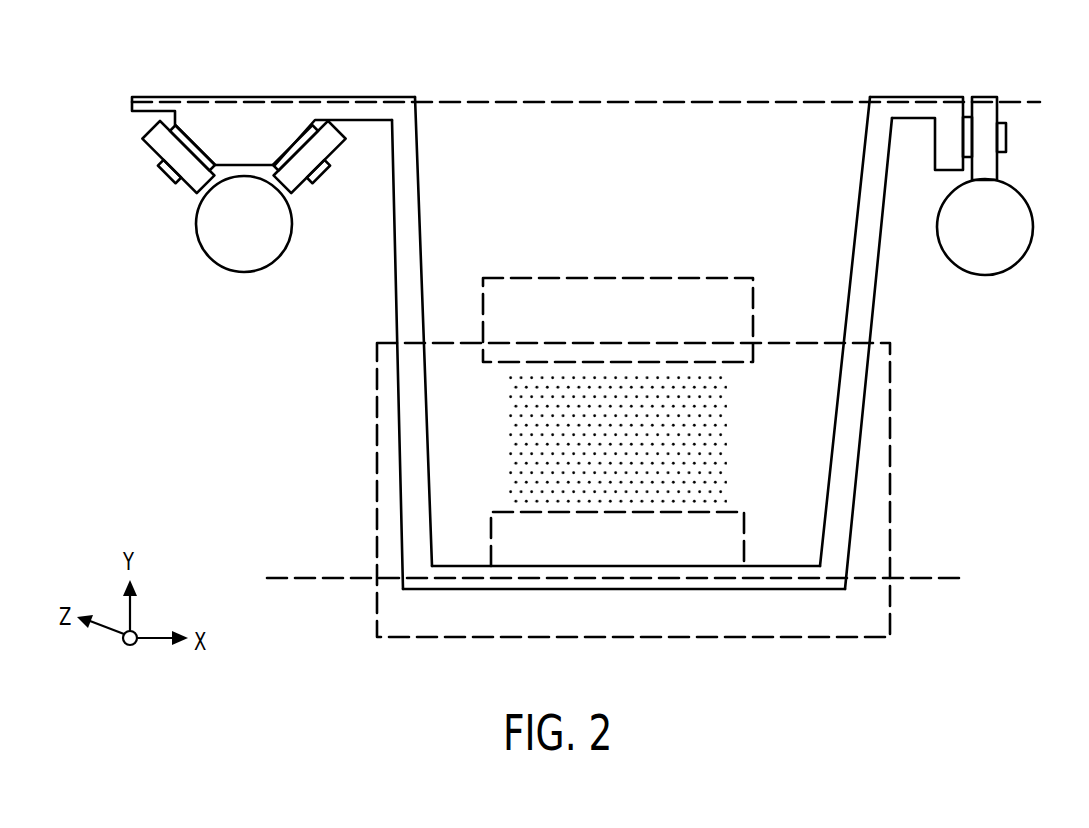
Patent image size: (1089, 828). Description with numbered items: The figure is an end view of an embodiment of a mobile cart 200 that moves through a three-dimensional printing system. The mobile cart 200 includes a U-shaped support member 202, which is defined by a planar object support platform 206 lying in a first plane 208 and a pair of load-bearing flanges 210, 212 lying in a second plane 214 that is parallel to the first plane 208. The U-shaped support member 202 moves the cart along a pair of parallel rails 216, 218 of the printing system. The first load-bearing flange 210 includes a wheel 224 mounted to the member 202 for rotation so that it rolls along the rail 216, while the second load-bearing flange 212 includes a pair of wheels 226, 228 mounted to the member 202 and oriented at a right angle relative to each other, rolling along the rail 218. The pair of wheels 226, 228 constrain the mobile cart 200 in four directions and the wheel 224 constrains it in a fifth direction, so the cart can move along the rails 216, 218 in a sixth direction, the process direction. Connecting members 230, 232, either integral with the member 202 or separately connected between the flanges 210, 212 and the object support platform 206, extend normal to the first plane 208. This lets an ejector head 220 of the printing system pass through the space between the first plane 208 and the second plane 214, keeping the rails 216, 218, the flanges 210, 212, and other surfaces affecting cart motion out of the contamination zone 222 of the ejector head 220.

The mobile cart 200 is at (261, 473).
The U-shaped support member 202 is at (858, 450).
The planar object support platform 206 is at (609, 592).
The first plane 208 is at (350, 576).
The first load-bearing flange 210 is at (923, 95).
The second load-bearing flange 212 is at (282, 95).
The second plane 214 is at (1018, 100).
The rail 216 is at (996, 276).
The rail 218 is at (263, 272).
The ejector head 220 is at (625, 276).
The contamination zone 222 is at (375, 437).
The wheel 224 is at (986, 157).
The wheel 226 is at (168, 148).
The wheel 228 is at (292, 182).
The connecting member 230 is at (872, 318).
The connecting member 232 is at (392, 293).